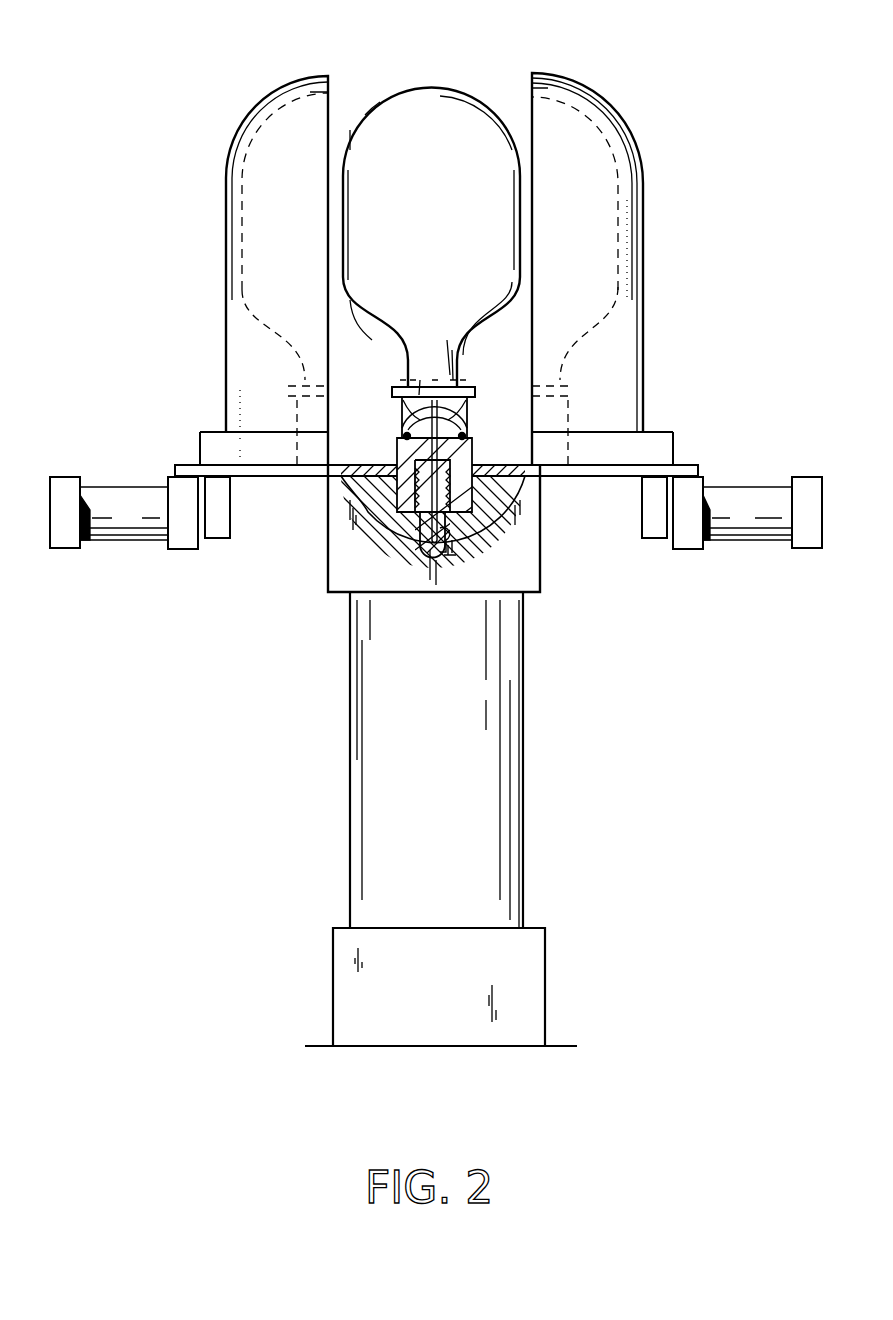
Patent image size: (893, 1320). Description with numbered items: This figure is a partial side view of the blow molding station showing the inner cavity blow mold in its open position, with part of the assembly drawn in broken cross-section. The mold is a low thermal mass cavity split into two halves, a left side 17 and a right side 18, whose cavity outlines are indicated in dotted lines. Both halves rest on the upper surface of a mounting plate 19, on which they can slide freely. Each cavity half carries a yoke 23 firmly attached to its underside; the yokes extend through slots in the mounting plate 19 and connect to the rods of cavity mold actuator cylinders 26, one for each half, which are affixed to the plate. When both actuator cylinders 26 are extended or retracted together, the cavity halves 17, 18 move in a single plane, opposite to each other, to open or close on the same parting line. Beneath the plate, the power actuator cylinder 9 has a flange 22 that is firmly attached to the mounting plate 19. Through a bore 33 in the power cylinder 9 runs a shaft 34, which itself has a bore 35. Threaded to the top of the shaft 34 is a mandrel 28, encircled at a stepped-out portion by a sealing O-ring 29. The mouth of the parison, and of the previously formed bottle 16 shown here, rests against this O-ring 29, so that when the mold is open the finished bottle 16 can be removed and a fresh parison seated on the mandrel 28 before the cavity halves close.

The power actuator cylinder 9 is at (437, 785).
The bottle 16 is at (440, 105).
The left side of inner cavity mold 17 is at (243, 343).
The right side of inner cavity mold 18 is at (643, 327).
The mounting plate 19 is at (625, 465).
The flange 22 is at (337, 560).
The yoke 23 is at (232, 515).
The cavity mold actuator cylinder 26 is at (117, 487).
The mandrel 28 is at (398, 448).
The sealing O-ring 29 is at (462, 450).
The bore 33 is at (450, 532).
The shaft 34 is at (445, 545).
The bore 35 is at (428, 510).